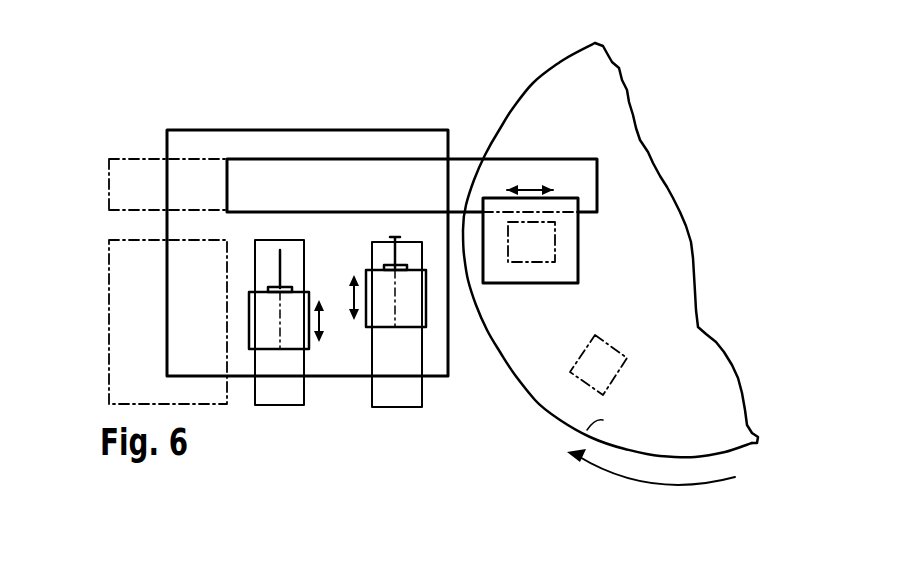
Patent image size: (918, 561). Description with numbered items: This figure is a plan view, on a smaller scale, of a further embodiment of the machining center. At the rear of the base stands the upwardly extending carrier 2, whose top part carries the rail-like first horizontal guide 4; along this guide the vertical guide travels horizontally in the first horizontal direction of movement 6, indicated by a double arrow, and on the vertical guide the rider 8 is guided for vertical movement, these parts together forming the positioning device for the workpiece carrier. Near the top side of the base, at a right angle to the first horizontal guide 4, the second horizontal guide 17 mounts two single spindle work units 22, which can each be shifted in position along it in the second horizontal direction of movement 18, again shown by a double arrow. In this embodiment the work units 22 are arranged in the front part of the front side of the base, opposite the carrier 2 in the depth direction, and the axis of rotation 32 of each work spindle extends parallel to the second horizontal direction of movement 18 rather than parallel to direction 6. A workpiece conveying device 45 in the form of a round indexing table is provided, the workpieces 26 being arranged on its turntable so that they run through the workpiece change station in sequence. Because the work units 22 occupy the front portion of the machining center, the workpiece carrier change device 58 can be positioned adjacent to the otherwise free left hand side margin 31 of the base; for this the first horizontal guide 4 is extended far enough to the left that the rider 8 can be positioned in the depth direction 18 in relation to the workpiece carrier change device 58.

The carrier 2 is at (412, 140).
The first horizontal guide 4 is at (355, 173).
The first horizontal direction of movement 6 is at (533, 186).
The rider 8 is at (567, 245).
The second horizontal guide 17 is at (378, 250).
The second horizontal direction of movement 18 is at (348, 296).
The work unit 22 is at (335, 340).
The workpiece 26 is at (522, 256).
The left hand side margin 31 is at (170, 292).
The axis of rotation 32 is at (282, 332).
The workpiece conveying device 45 is at (575, 422).
The workpiece carrier change device 58 is at (115, 385).